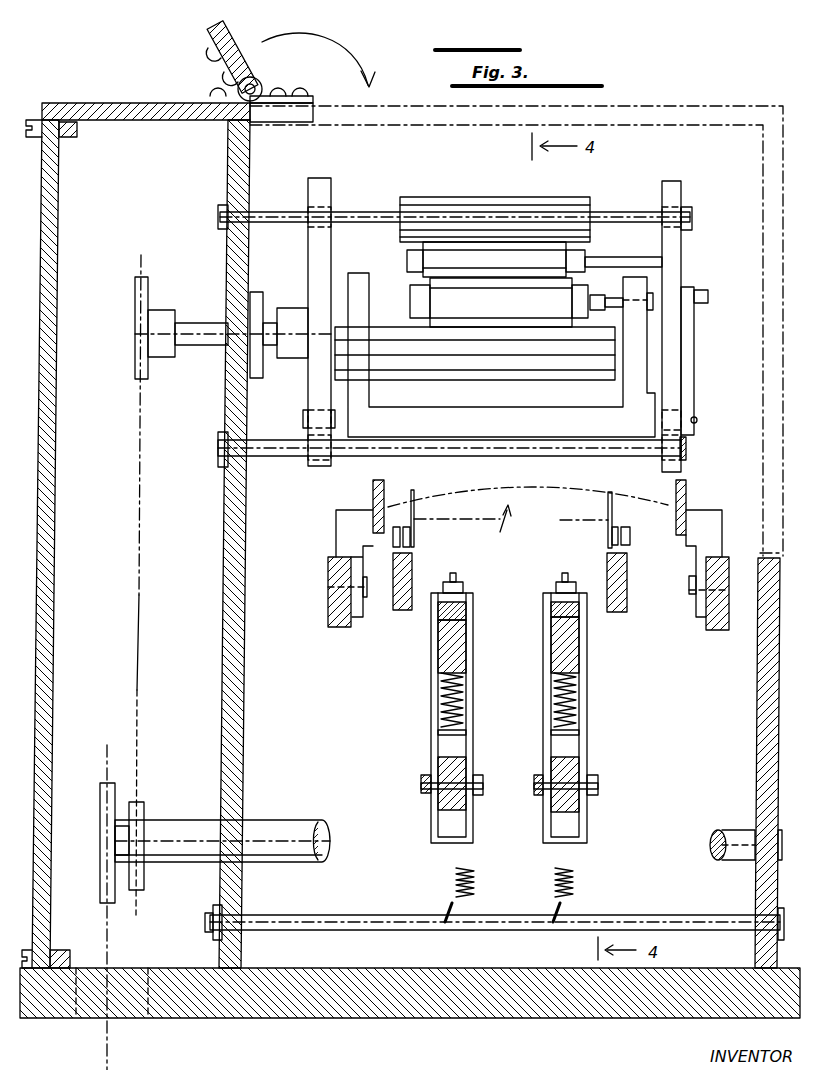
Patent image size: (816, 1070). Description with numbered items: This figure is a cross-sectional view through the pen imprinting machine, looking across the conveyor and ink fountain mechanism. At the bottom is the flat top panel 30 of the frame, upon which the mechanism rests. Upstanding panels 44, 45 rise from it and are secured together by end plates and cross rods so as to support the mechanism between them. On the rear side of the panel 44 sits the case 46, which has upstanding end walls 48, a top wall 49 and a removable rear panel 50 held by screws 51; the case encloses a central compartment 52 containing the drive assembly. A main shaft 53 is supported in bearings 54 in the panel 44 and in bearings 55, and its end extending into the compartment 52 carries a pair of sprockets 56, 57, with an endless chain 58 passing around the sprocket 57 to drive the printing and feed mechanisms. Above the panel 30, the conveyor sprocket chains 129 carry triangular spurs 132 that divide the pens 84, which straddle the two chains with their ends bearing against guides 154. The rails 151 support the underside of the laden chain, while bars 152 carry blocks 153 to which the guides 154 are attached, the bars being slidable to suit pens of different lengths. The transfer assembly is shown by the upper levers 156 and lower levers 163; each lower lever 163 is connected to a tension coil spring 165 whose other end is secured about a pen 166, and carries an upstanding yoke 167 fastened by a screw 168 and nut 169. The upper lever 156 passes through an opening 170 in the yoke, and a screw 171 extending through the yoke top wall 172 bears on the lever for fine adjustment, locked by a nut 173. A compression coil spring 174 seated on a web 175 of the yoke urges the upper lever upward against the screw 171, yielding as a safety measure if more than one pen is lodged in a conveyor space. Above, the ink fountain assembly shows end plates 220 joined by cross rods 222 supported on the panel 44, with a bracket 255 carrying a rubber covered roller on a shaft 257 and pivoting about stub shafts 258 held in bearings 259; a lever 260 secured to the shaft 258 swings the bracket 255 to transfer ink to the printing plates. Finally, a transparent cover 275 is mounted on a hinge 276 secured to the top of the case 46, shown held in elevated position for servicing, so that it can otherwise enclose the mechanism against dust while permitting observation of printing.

The flat top panel 30 is at (268, 996).
The upstanding panel 44 is at (224, 563).
The upstanding panel 45 is at (780, 680).
The case 46 is at (37, 97).
The end wall 48 is at (100, 103).
The top wall 49 is at (140, 120).
The removable rear panel 50 is at (55, 596).
The screw 51 is at (30, 138).
The central compartment 52 is at (106, 528).
The main shaft 53 is at (288, 820).
The bearing 54 is at (245, 800).
The bearing 55 is at (758, 800).
The sprocket 56 is at (105, 783).
The sprocket 57 is at (144, 805).
The endless chain 58 is at (139, 665).
The pen 84 is at (528, 519).
The sprocket chain 129 is at (392, 542).
The spur 132 is at (415, 492).
The rail 151 is at (400, 612).
The bar 152 is at (328, 568).
The block 153 is at (343, 512).
The guide 154 is at (373, 490).
The upper lever 156 is at (440, 650).
The lower lever 163 is at (452, 805).
The tension coil spring 165 is at (478, 882).
The pen 166 is at (376, 915).
The yoke 167 is at (430, 695).
The screw 168 is at (420, 788).
The nut 169 is at (478, 782).
The opening 170 is at (440, 612).
The screw 171 is at (455, 580).
The top wall 172 is at (552, 585).
The nut 173 is at (573, 582).
The compression coil spring 174 is at (445, 705).
The web 175 is at (452, 735).
The end plate 220 is at (308, 186).
The cross rod 222 is at (620, 212).
The bracket 255 is at (633, 372).
The shaft 257 is at (652, 298).
The stub shaft 258 is at (697, 420).
The bearing 259 is at (688, 446).
The lever 260 is at (696, 322).
The transparent cover 275 is at (727, 100).
The hinge 276 is at (262, 88).